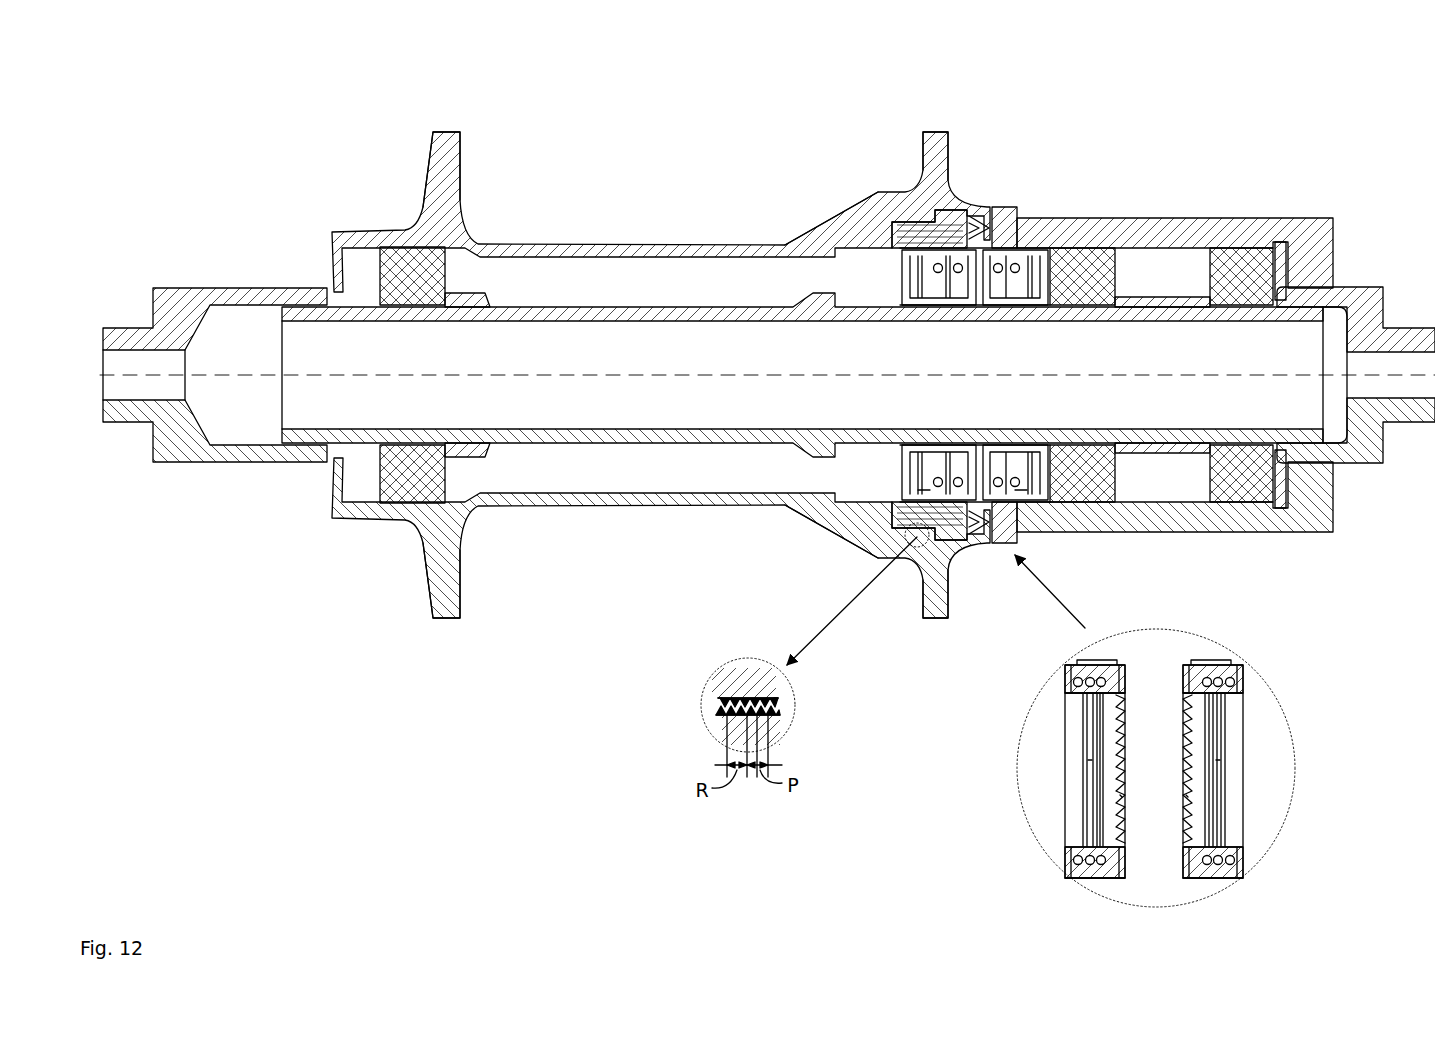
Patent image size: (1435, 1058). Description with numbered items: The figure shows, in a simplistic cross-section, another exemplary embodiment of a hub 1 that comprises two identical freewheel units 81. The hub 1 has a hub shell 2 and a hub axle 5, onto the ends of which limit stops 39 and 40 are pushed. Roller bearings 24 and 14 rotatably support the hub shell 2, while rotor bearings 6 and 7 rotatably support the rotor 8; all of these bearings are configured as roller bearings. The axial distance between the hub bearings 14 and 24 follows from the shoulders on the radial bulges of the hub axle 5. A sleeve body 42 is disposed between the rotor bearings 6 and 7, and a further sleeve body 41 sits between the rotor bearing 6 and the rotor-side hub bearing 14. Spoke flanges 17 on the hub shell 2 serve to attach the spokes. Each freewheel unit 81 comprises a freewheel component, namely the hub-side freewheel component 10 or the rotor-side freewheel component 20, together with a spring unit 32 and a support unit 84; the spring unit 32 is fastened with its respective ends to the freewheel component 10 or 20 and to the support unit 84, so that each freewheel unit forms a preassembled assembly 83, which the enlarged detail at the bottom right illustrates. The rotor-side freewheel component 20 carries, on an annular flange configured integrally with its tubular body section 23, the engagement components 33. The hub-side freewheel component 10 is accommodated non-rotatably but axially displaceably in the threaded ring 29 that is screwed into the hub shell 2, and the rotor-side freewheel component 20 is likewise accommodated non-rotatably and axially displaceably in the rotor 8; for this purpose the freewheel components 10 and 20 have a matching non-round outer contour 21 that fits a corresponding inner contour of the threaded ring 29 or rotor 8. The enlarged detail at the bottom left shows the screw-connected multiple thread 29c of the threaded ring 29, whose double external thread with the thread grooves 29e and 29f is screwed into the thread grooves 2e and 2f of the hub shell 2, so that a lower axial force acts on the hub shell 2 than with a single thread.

The hub 1 is at (285, 117).
The hub shell 2 is at (600, 245).
The thread groove 2e is at (725, 710).
The thread groove 2f is at (775, 710).
The hub axle 5 is at (340, 318).
The rotor bearing 6 is at (1100, 248).
The rotor bearing 7 is at (1240, 300).
The rotor 8 is at (1208, 228).
The hub-side freewheel component 10 is at (932, 440).
The roller bearing 14 is at (828, 240).
The spoke flange 17 is at (440, 150).
The rotor-side freewheel component 20 is at (1003, 238).
The non-round outer contour 21 is at (1207, 878).
The tubular body section 23 is at (923, 492).
The roller bearing 24 is at (425, 297).
The threaded ring 29 is at (905, 233).
The multiple thread 29c is at (742, 695).
The thread groove 29e is at (722, 700).
The thread groove 29f is at (778, 700).
The spring unit 32 is at (905, 517).
The engagement components 33 is at (1185, 795).
The limit stop 39 is at (185, 298).
The limit stop 40 is at (1372, 290).
The sleeve body 41 is at (1037, 303).
The sleeve body 42 is at (1168, 300).
The freewheel unit 81 is at (937, 240).
The preassembled assembly 83 is at (950, 333).
The support unit 84 is at (1067, 680).